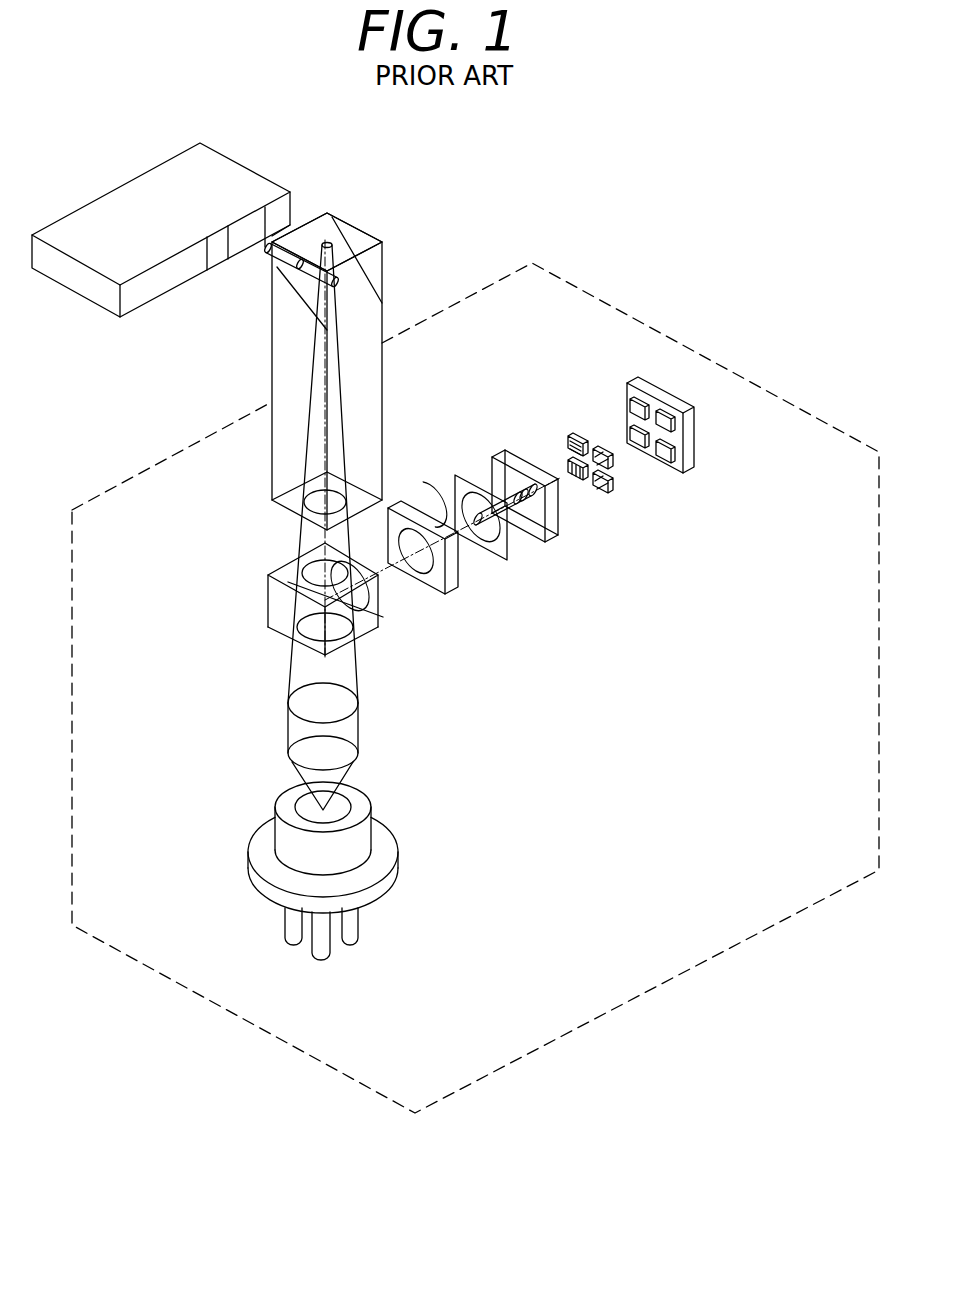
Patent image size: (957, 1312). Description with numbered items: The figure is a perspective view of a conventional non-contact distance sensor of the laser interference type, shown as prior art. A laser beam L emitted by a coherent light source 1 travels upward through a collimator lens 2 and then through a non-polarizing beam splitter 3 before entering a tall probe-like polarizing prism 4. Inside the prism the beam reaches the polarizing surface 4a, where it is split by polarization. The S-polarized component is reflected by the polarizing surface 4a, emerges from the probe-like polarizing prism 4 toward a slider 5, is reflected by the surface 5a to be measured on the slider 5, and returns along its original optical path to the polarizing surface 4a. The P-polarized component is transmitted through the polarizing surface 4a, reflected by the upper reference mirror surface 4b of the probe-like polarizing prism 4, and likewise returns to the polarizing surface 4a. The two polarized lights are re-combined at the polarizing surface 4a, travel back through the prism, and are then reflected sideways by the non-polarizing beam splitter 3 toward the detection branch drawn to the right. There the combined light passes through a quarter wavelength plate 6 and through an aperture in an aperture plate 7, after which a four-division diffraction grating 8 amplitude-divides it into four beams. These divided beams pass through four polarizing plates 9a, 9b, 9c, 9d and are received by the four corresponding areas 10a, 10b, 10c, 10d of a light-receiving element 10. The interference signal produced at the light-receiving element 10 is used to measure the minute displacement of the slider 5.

The coherent light source 1 is at (273, 832).
The collimator lens 2 is at (287, 728).
The non-polarizing beam splitter 3 is at (268, 603).
The probe-like polarizing prism 4 is at (319, 413).
The polarizing surface 4a is at (272, 300).
The upper reference mirror surface 4b is at (357, 237).
The slider 5 is at (185, 214).
The surface to be measured 5a is at (248, 235).
The quarter wavelength plate 6 is at (433, 590).
The aperture plate 7 is at (490, 558).
The four-division diffraction grating 8 is at (550, 545).
The polarizing plate 9a is at (600, 495).
The polarizing plate 9b is at (615, 457).
The polarizing plate 9c is at (570, 437).
The polarizing plate 9d is at (570, 465).
The light-receiving element 10 is at (670, 407).
The area of light-receiving element 10a is at (668, 458).
The area of light-receiving element 10b is at (672, 427).
The area of light-receiving element 10c is at (628, 400).
The area of light-receiving element 10d is at (627, 438).
The laser beam L is at (298, 668).